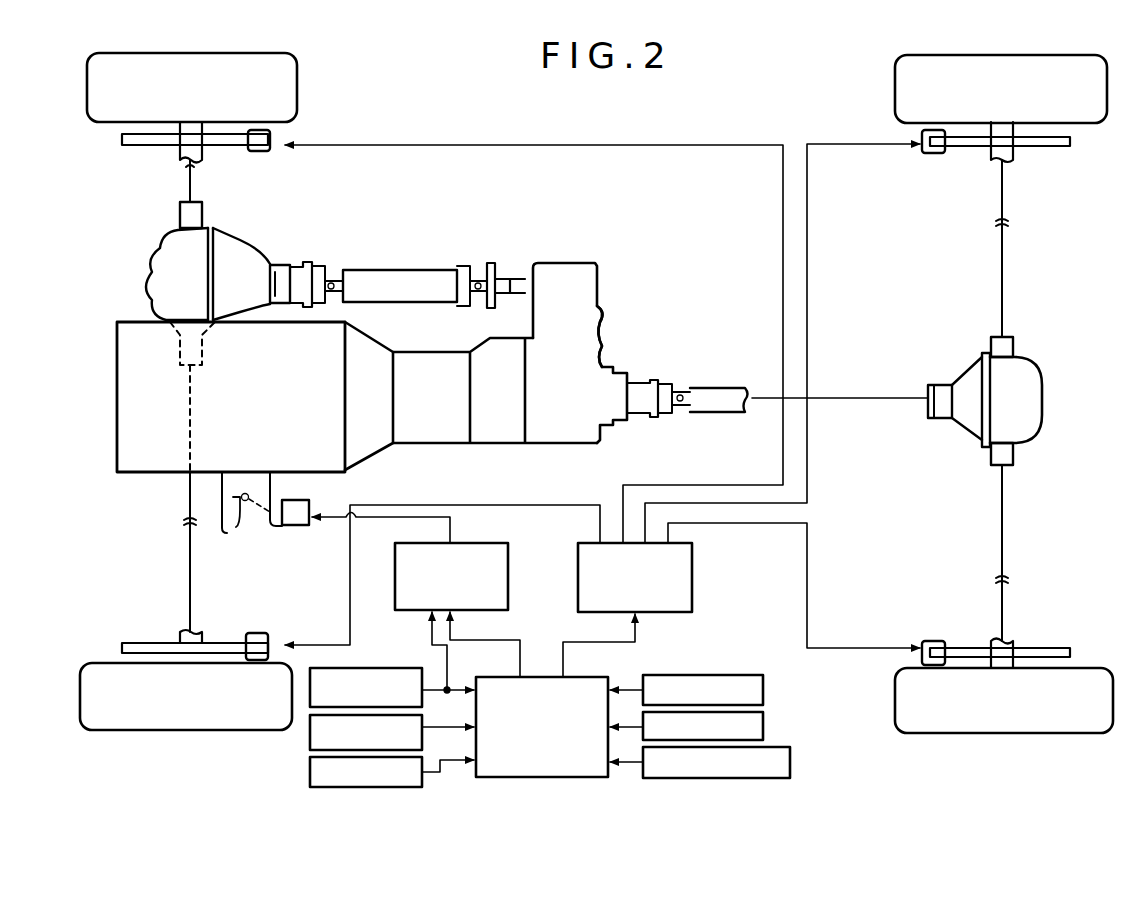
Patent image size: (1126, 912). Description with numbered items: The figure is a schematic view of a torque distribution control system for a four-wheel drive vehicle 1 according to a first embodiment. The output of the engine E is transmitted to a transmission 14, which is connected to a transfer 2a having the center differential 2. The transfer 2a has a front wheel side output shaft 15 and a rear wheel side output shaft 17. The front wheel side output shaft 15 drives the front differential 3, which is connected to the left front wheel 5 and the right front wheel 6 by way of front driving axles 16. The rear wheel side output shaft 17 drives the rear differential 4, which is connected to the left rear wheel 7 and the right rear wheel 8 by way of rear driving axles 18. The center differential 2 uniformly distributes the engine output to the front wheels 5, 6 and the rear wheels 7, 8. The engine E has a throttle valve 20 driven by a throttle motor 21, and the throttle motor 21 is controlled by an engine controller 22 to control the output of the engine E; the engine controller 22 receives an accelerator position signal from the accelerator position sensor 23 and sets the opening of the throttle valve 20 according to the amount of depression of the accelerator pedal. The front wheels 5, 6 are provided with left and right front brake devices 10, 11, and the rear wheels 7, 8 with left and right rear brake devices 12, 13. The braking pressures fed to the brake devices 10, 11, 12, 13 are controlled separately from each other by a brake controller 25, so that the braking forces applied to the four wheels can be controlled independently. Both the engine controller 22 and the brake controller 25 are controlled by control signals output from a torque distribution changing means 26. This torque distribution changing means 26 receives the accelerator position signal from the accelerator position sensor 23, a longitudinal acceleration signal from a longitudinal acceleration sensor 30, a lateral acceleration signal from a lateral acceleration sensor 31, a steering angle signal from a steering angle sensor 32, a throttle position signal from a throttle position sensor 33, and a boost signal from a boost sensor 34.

The four-wheel drive vehicle 1 is at (508, 117).
The center differential 2 is at (600, 275).
The transfer 2a is at (586, 352).
The front differential 3 is at (155, 252).
The rear differential 4 is at (1032, 418).
The left front wheel 5 is at (215, 726).
The right front wheel 6 is at (297, 101).
The left rear wheel 7 is at (1000, 733).
The right rear wheel 8 is at (895, 97).
The left front brake device 10 is at (258, 633).
The right front brake device 11 is at (258, 152).
The left rear brake device 12 is at (942, 641).
The right rear brake device 13 is at (933, 153).
The transmission 14 is at (433, 430).
The front wheel side output shaft 15 is at (438, 272).
The front driving axles 16 is at (180, 212).
The rear wheel side output shaft 17 is at (722, 388).
The rear driving axles 18 is at (1002, 293).
The throttle valve 20 is at (242, 530).
The throttle motor 21 is at (300, 525).
The engine controller 22 is at (482, 543).
The accelerator position sensor 23 is at (364, 667).
The brake controller 25 is at (692, 573).
The torque distribution changing means 26 is at (590, 677).
The longitudinal acceleration sensor 30 is at (738, 675).
The lateral acceleration sensor 31 is at (763, 727).
The steering angle sensor 32 is at (790, 763).
The throttle position sensor 33 is at (310, 730).
The boost sensor 34 is at (310, 770).
The engine E is at (112, 446).